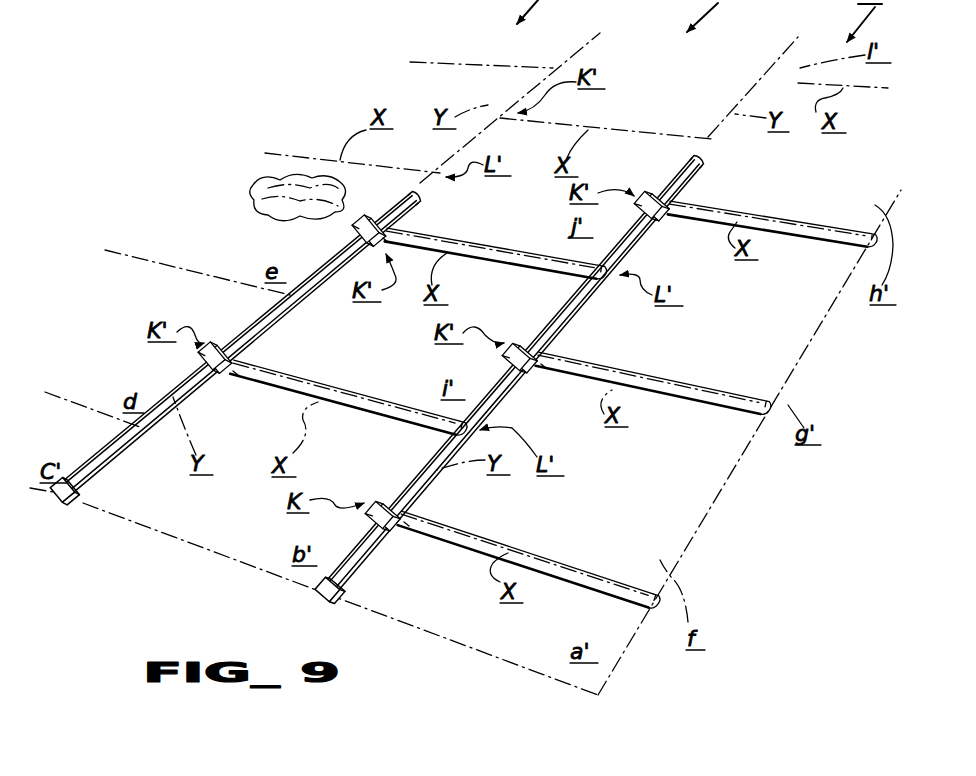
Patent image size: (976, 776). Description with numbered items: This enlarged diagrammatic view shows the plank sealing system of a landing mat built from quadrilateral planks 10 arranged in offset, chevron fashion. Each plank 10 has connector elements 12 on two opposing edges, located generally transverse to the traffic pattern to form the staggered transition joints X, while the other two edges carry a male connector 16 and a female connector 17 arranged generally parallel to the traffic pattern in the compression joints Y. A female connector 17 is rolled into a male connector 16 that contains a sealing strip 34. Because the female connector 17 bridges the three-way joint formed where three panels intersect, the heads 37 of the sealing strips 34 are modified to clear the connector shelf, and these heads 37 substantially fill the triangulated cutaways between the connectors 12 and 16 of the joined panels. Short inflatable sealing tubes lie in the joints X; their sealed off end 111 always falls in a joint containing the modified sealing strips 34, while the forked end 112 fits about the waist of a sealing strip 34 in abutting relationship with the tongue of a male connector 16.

The plank 10 is at (465, 381).
The connector element 12 is at (578, 555).
The male connector 16 is at (588, 308).
The female connector 17 is at (318, 570).
The sealing strip 34 is at (679, 167).
The head 37 is at (688, 190).
The sealed off end 111 is at (385, 237).
The forked end 112 is at (845, 255).